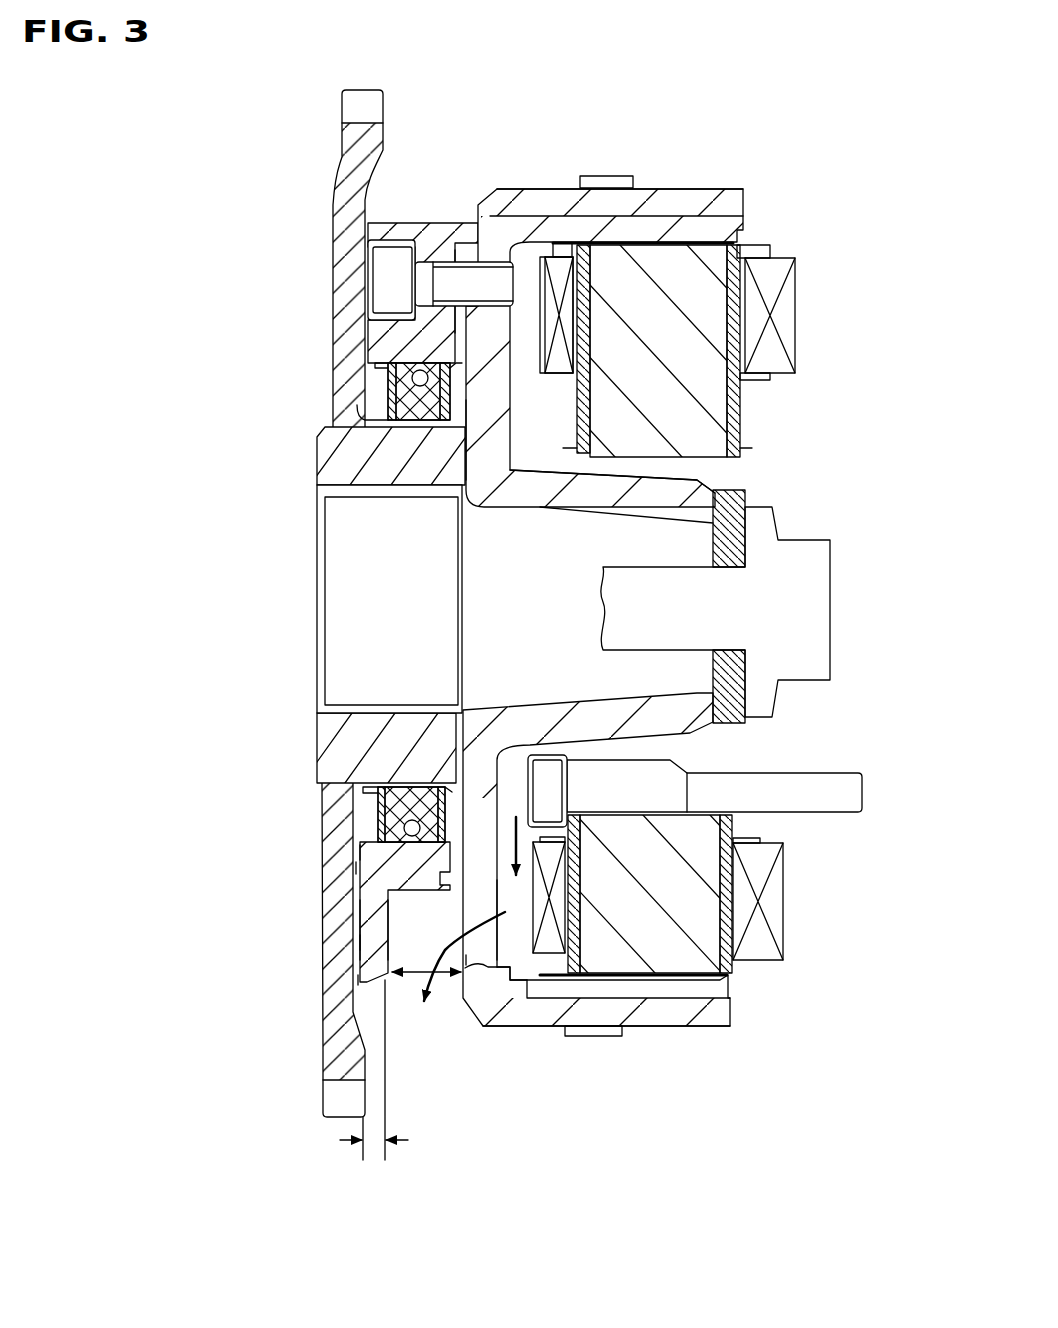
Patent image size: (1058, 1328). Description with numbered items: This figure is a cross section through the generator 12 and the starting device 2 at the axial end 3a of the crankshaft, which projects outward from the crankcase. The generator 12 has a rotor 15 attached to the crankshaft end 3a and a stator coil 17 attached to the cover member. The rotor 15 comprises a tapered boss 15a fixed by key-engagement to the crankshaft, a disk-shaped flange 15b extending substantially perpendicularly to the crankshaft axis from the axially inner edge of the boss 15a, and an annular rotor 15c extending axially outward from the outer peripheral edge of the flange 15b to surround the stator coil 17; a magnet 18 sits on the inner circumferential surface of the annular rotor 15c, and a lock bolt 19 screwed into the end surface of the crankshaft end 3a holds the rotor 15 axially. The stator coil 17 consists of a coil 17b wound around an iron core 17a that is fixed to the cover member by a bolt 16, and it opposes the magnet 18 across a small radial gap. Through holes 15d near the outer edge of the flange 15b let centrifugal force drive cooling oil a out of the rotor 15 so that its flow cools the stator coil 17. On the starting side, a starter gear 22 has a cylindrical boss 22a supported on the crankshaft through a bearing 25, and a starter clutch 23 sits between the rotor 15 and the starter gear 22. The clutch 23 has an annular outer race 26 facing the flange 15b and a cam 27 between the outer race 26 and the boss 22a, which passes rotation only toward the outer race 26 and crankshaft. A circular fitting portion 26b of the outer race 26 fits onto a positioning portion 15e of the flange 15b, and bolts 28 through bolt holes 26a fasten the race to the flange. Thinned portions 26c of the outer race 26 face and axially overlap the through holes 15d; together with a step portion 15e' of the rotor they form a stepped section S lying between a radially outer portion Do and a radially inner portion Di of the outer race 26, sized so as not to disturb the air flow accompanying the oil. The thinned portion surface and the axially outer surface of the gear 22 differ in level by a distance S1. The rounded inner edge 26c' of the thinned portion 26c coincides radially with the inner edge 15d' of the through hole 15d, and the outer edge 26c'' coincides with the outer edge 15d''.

The starting device 2 is at (360, 601).
The axial end of the crankshaft 3a is at (375, 652).
The generator 12 is at (571, 598).
The rotor 15 is at (528, 598).
The tapered boss 15a is at (697, 477).
The disk-shaped flange 15b is at (517, 410).
The annular rotor 15c is at (555, 189).
The through hole 15d is at (606, 1047).
The radially inner edge of the through hole 15d' is at (593, 913).
The radially outer edge of the through hole 15d'' is at (513, 1042).
The positioning portion 15e is at (285, 839).
The step portion 15e' is at (300, 958).
The bolt 16 is at (852, 773).
The stator coil 17 is at (676, 330).
The iron core 17a is at (715, 748).
The coil 17b is at (790, 893).
The magnet 18 is at (745, 232).
The lock bolt 19 is at (838, 545).
The starter gear 22 is at (333, 296).
The cylindrical boss 22a is at (357, 400).
The starter clutch 23 is at (375, 206).
The bearing 25 is at (385, 488).
The outer race 26 is at (387, 664).
The bolt hole 26a is at (368, 303).
The fitting portion 26b is at (440, 313).
The thinned portion 26c is at (405, 973).
The radially inner edge of the thinned portion 26c' is at (298, 929).
The radially outer edge of the thinned portion 26c'' is at (282, 980).
The cam 27 is at (385, 812).
The bolt 28 is at (367, 268).
The cooling oil a is at (470, 962).
The stepped section S is at (437, 1000).
The distance S1 is at (376, 1160).
The radially inner portion Di is at (360, 868).
The radially outer portion Do is at (363, 980).